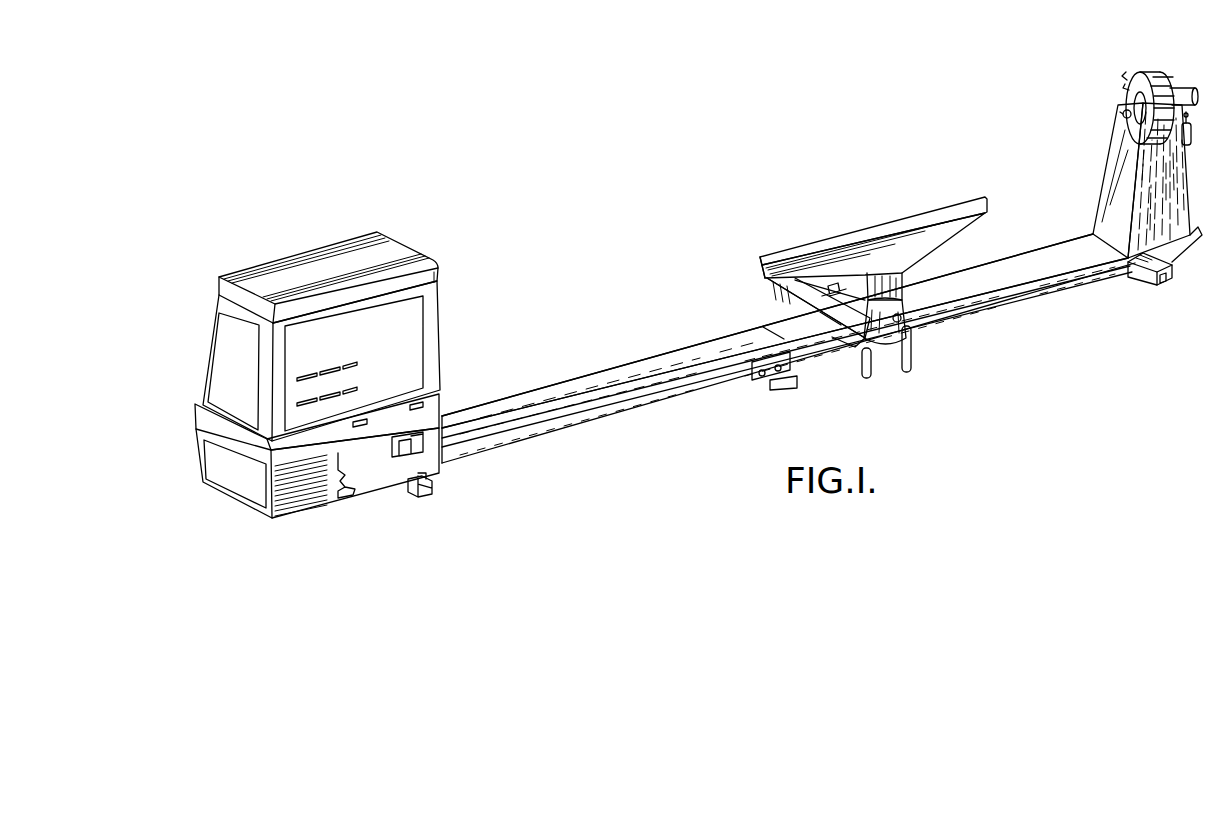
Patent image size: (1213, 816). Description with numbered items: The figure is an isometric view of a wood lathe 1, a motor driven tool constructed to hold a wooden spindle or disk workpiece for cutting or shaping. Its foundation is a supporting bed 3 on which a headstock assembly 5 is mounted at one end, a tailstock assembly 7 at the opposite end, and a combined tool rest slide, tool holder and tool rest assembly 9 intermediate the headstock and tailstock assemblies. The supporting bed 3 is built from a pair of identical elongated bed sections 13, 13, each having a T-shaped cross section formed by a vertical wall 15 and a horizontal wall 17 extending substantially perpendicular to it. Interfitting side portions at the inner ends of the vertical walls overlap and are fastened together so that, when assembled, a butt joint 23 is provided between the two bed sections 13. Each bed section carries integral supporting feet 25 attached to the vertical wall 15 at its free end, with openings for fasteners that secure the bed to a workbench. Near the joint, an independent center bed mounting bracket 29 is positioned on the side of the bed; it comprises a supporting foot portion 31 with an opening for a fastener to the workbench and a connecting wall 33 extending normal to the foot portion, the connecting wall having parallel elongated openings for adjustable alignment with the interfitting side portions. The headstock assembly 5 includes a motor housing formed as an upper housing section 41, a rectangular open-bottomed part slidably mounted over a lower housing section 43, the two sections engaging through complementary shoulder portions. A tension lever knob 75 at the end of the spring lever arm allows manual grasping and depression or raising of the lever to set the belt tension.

The wood lathe 1 is at (754, 140).
The supporting bed 3 is at (788, 354).
The headstock assembly 5 is at (288, 359).
The tailstock assembly 7 is at (1149, 170).
The combined tool rest slide, tool holder and tool rest assembly 9 is at (890, 205).
The elongated bed section 13 is at (788, 351).
The vertical wall 15 is at (498, 448).
The horizontal wall 17 is at (586, 388).
The butt joint 23 is at (770, 327).
The integral supporting feet 25 is at (1157, 292).
The center bed mounting bracket 29 is at (798, 392).
The supporting foot portion 31 is at (793, 390).
The connecting wall 33 is at (789, 373).
The upper housing section 41 is at (225, 354).
The lower housing section 43 is at (228, 465).
The tension lever knob 75 is at (360, 488).